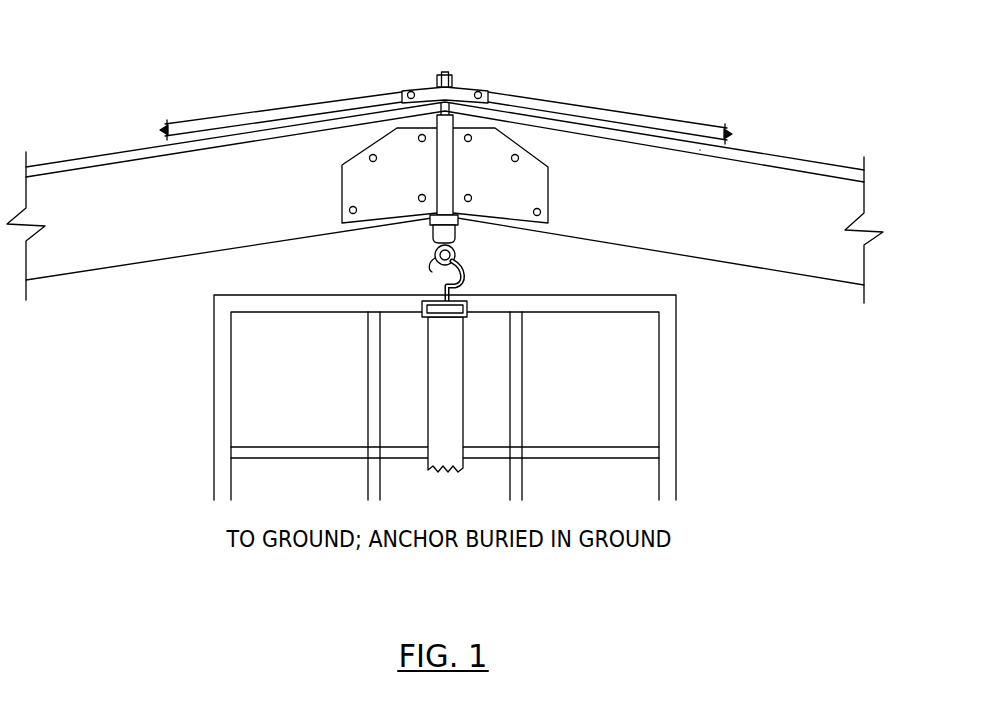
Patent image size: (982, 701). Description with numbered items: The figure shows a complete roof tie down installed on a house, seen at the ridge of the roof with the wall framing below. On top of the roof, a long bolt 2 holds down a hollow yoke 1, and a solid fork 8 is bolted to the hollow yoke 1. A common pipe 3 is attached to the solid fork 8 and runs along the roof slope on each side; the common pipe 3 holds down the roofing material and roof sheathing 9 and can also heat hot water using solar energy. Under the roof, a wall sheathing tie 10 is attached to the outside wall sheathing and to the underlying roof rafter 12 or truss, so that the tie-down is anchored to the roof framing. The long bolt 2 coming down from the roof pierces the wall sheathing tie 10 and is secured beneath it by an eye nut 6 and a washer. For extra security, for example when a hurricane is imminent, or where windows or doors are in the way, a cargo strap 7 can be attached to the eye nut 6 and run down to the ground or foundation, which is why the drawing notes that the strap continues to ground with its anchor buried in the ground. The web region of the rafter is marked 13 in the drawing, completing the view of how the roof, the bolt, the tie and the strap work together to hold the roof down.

The hollow yoke 1 is at (437, 92).
The long bolt 2 is at (445, 73).
The common pipe 3 is at (227, 125).
The eye nut 6 is at (468, 268).
The cargo strap 7 is at (457, 218).
The solid fork 8 is at (402, 90).
The roofing material and roof sheathing 9 is at (768, 158).
The wall sheathing tie 10 is at (413, 207).
The roof rafter 12 is at (580, 243).
The web 13 is at (715, 240).